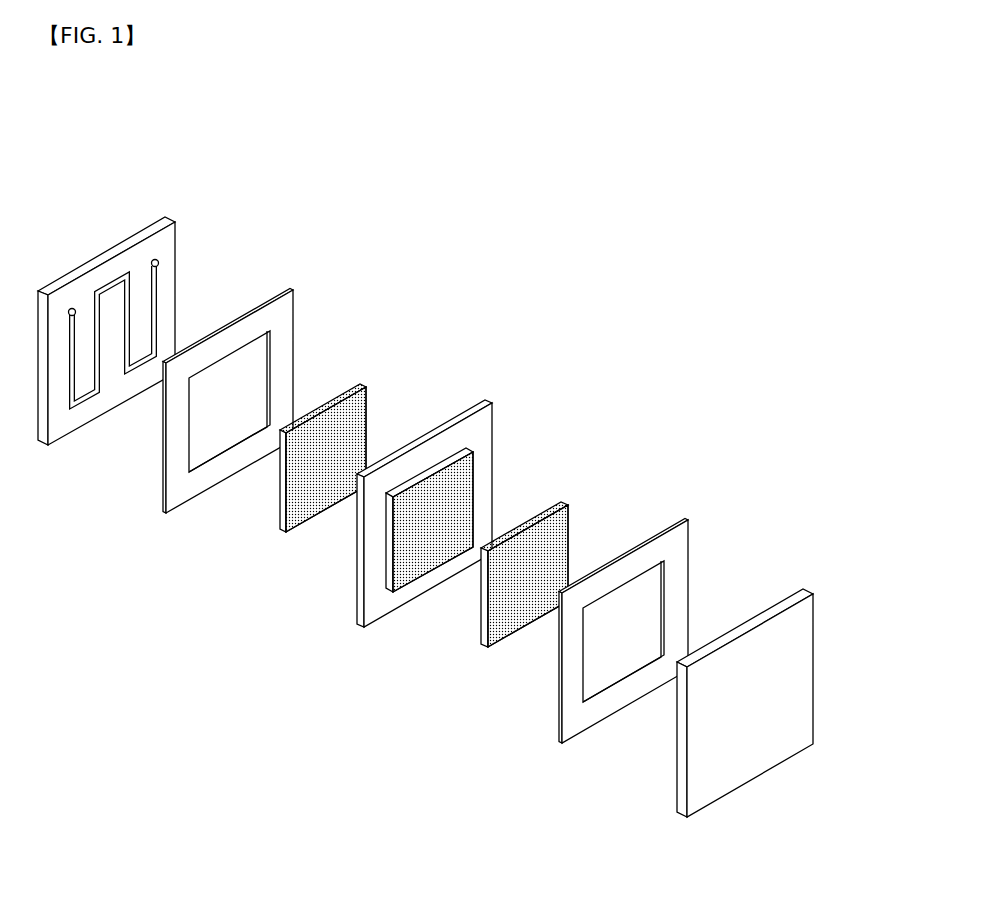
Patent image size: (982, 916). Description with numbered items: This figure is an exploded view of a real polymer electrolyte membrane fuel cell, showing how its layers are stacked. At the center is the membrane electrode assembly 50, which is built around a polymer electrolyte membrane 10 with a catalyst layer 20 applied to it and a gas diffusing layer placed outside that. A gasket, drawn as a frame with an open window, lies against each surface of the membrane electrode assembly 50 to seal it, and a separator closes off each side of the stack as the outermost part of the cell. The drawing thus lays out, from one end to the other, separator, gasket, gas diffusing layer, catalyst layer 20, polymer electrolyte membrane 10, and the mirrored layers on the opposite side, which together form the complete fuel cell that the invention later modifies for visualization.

The polymer electrolyte membrane 10 is at (486, 401).
The catalyst layer 20 is at (474, 475).
The membrane electrode assembly 50 is at (430, 305).